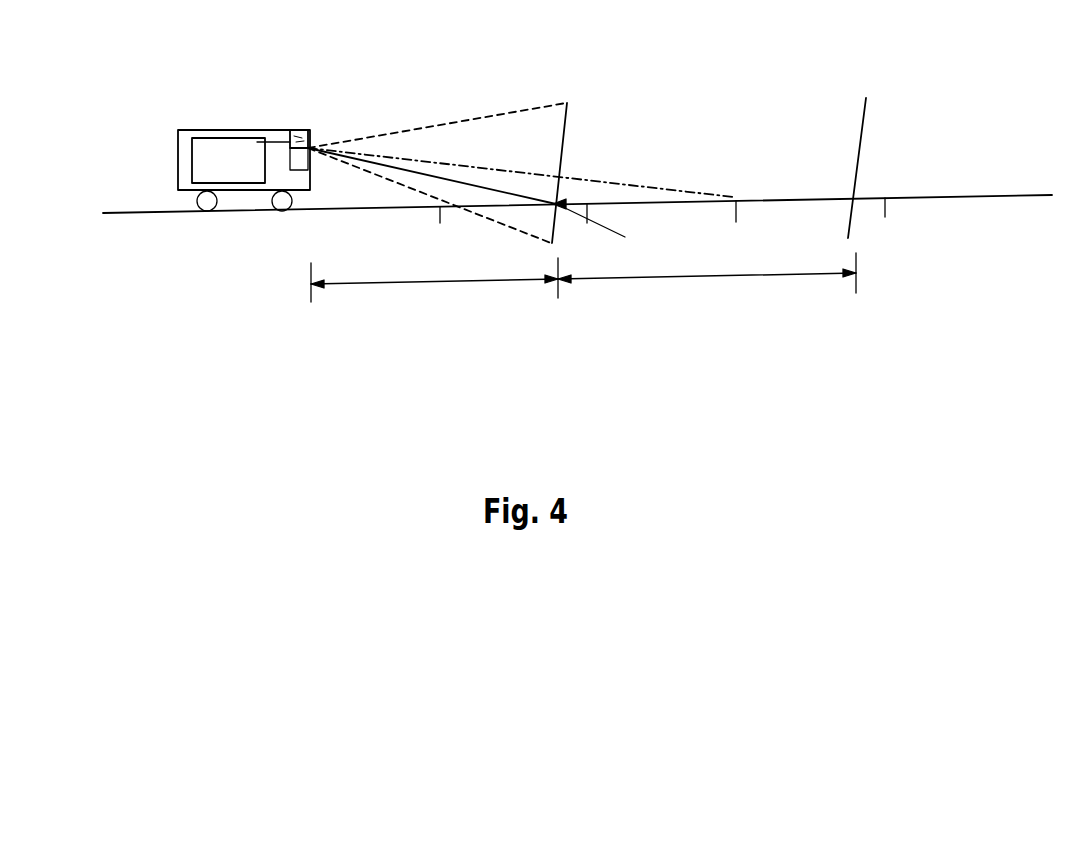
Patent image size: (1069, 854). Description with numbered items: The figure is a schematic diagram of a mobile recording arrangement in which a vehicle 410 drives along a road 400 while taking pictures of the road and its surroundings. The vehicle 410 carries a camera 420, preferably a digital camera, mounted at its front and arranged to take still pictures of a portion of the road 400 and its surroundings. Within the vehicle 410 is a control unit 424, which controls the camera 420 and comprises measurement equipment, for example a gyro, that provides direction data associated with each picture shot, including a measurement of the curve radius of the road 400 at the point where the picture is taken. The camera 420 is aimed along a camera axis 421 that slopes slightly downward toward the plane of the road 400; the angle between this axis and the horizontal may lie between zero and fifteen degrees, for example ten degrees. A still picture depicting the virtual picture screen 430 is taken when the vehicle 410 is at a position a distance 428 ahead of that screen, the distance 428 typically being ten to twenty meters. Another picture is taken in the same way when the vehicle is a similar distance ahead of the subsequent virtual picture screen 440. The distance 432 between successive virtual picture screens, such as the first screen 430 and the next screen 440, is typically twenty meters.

The road 400 is at (138, 214).
The vehicle 410 is at (178, 137).
The camera 420 is at (296, 128).
The control unit 424 is at (208, 138).
The optical axis 421 is at (686, 190).
The virtual picture screen 430 is at (568, 130).
The subsequent virtual picture screen 440 is at (868, 118).
The distance 428 is at (440, 283).
The distance between subsequent virtual picture screens 432 is at (725, 277).